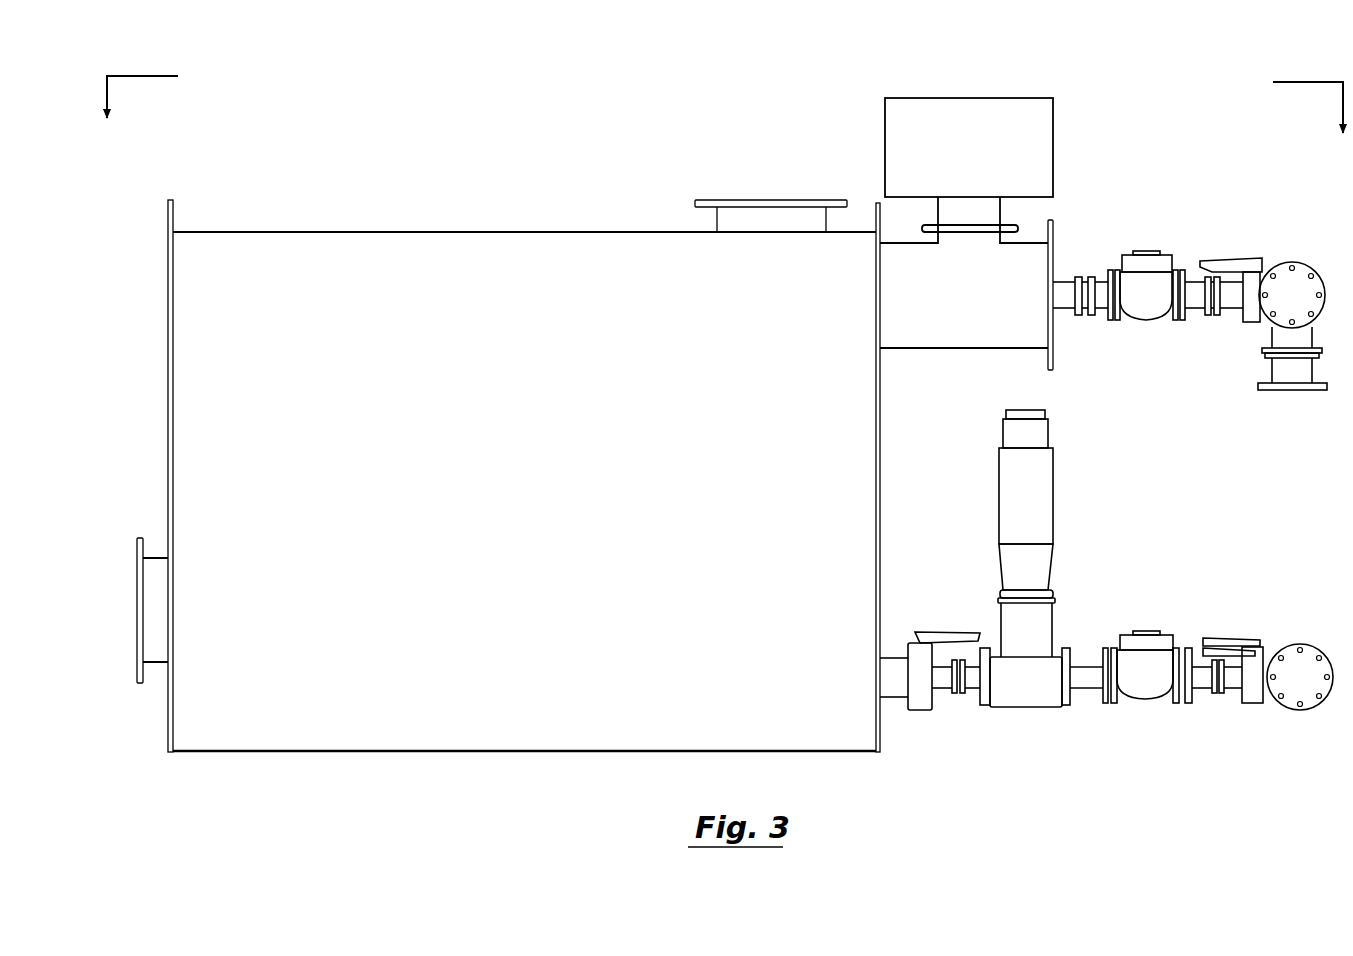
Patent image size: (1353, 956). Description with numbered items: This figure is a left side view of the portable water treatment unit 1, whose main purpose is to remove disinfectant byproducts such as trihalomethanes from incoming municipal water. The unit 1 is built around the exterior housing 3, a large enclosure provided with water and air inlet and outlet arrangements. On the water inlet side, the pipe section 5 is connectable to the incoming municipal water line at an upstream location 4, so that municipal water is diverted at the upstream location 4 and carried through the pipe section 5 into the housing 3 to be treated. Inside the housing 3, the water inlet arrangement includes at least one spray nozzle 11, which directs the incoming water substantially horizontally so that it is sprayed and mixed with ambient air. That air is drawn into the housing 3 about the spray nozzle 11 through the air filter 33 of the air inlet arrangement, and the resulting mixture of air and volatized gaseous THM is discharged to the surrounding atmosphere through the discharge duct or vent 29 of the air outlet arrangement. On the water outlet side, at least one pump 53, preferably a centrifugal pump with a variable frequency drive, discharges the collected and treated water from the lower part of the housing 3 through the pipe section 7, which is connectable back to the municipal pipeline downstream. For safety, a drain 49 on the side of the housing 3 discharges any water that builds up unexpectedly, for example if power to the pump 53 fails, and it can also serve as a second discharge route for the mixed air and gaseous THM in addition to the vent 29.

The unit 1 is at (370, 148).
The exterior housing 3 is at (449, 225).
The upstream location 4 is at (721, 94).
The pipe section 5 is at (1290, 262).
The pipe section 7 is at (1300, 643).
The spray nozzle 11 is at (970, 305).
The discharge duct or vent 29 is at (753, 200).
The air filter 33 is at (984, 156).
The drain 49 is at (137, 595).
The pump 53 is at (1053, 520).